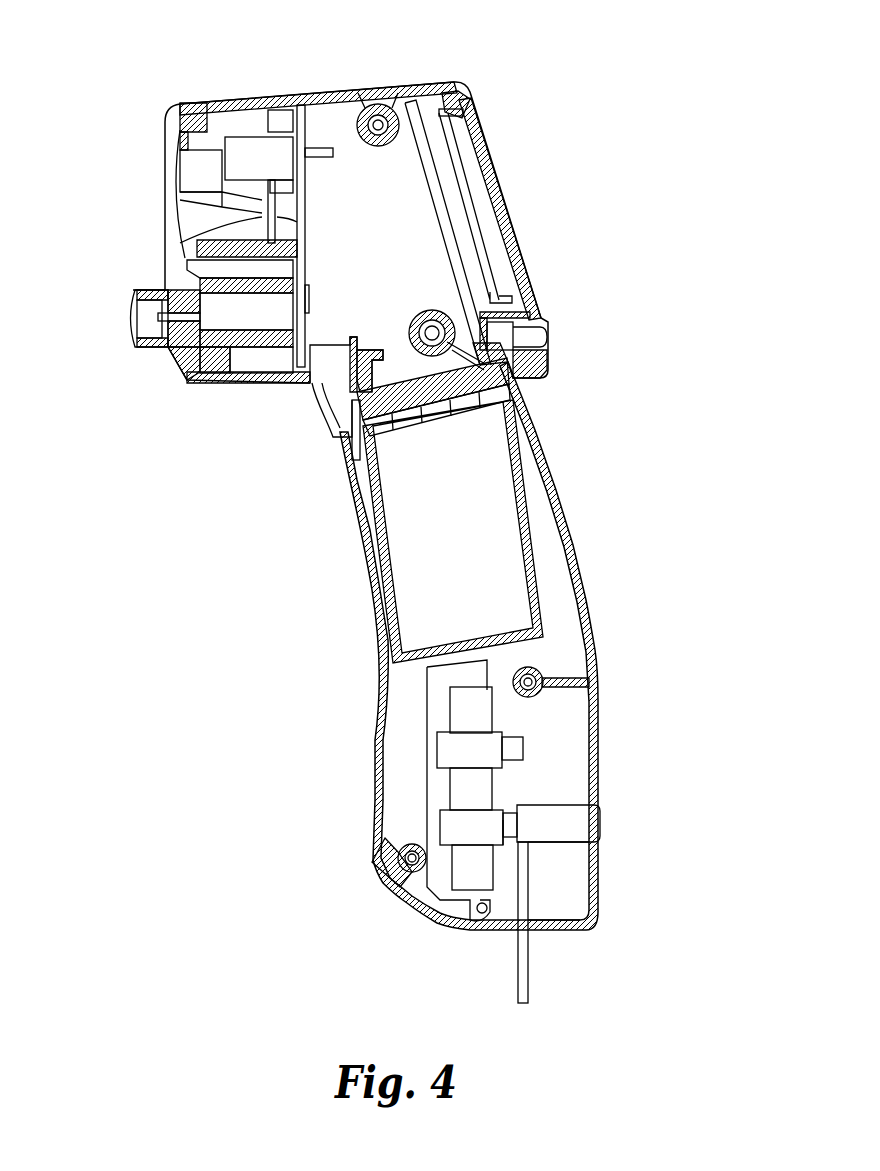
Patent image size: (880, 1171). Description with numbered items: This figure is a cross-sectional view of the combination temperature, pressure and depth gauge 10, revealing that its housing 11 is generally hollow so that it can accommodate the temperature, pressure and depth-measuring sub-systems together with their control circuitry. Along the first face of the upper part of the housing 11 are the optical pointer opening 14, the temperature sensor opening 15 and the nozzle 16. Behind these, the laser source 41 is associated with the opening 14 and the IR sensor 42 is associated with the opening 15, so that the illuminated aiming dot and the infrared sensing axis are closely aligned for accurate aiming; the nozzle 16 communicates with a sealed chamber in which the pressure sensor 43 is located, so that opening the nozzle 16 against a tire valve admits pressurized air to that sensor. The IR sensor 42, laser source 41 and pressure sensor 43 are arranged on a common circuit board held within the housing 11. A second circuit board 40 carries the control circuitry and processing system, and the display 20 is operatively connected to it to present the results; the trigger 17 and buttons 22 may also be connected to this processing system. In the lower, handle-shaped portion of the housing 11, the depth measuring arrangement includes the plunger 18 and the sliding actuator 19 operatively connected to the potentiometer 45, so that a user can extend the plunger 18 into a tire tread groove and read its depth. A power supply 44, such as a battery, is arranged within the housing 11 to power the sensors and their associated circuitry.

The gauge 10 is at (617, 137).
The housing 11 is at (458, 83).
The optical pointer opening 14 is at (193, 160).
The temperature sensor opening 15 is at (185, 198).
The nozzle 16 is at (147, 347).
The trigger 17 is at (323, 423).
The plunger 18 is at (530, 973).
The sliding actuator 19 is at (593, 820).
The display 20 is at (467, 153).
The buttons 22 is at (528, 338).
The second circuit board 40 is at (447, 233).
The laser source 41 is at (265, 158).
The IR sensor 42 is at (285, 214).
The pressure sensor 43 is at (293, 305).
The power supply 44 is at (473, 533).
The potentiometer 45 is at (463, 827).